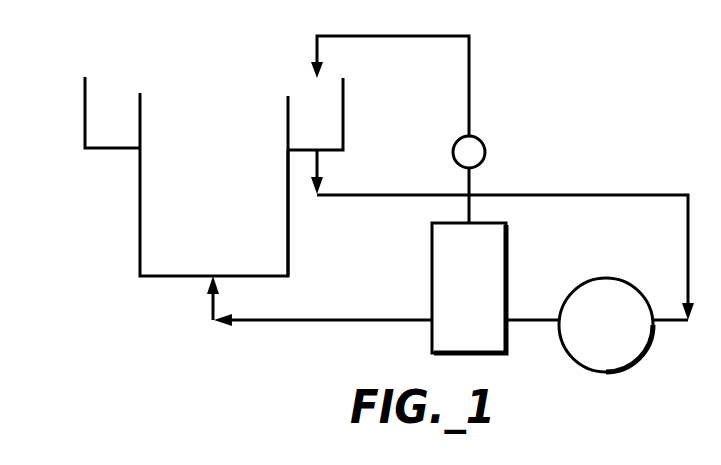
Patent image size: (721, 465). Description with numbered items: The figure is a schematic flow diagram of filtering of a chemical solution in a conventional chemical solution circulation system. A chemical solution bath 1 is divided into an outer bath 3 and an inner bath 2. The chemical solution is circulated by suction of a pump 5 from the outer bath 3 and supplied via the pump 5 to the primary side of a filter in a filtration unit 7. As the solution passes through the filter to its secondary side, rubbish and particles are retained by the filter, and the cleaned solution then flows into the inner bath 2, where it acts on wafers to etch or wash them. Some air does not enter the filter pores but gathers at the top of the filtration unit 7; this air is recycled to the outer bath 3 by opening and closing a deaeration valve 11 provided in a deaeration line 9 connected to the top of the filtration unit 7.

The chemical solution bath 1 is at (140, 206).
The inner bath 2 is at (288, 250).
The outer bath 3 is at (85, 120).
The pump 5 is at (605, 278).
The filtration unit 7 is at (508, 272).
The deaeration line 9 is at (469, 92).
The deaeration valve 11 is at (485, 152).